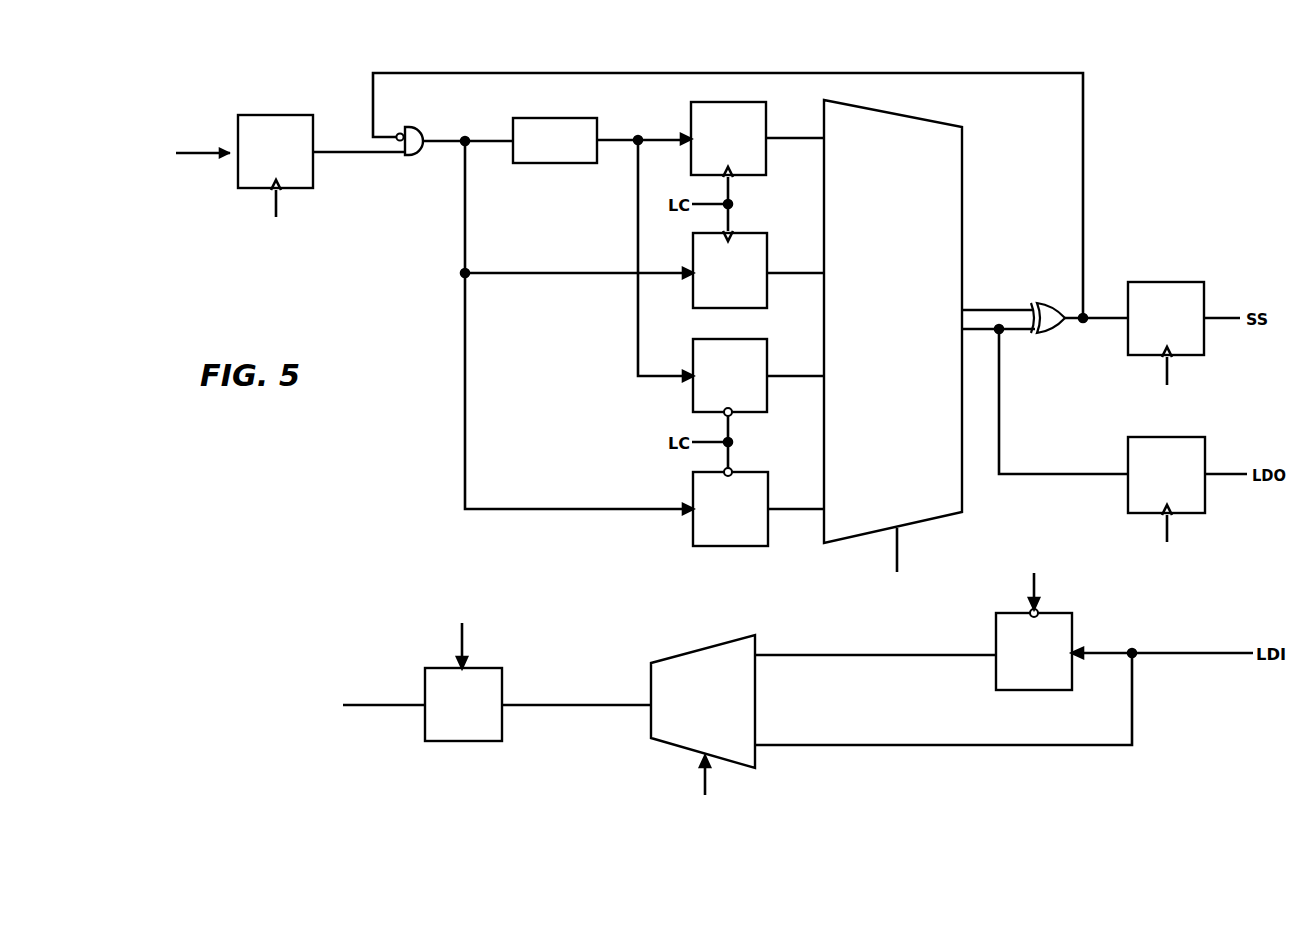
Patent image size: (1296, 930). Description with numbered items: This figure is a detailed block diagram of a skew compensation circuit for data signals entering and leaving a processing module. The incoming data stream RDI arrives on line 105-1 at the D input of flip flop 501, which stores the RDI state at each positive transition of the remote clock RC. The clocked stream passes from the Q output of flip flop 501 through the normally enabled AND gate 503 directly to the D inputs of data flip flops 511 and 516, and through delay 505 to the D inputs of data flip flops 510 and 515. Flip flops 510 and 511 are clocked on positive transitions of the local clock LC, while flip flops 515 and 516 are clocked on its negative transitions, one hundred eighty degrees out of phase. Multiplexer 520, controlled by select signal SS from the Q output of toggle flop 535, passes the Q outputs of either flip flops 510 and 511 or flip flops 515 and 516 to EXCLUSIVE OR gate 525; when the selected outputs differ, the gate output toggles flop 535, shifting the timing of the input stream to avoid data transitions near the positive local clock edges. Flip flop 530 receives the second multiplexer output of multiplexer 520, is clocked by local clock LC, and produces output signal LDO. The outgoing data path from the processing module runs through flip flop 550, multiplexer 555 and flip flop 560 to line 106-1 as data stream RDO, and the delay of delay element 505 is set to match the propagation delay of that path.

The flip flop 501 is at (268, 115).
The AND gate 503 is at (428, 104).
The delay 505 is at (547, 118).
The data flip flop 510 is at (722, 86).
The data flip flop 511 is at (752, 233).
The data flip flop 515 is at (748, 339).
The data flip flop 516 is at (749, 472).
The multiplexer 520 is at (894, 112).
The EXCLUSIVE OR gate 525 is at (1066, 279).
The flip flop 530 is at (1128, 497).
The toggle flop 535 is at (1160, 266).
The flip flop 550 is at (1072, 620).
The multiplexer 555 is at (691, 650).
The flip flop 560 is at (503, 676).
The line 105-1 is at (222, 158).
The line 106-1 is at (400, 704).